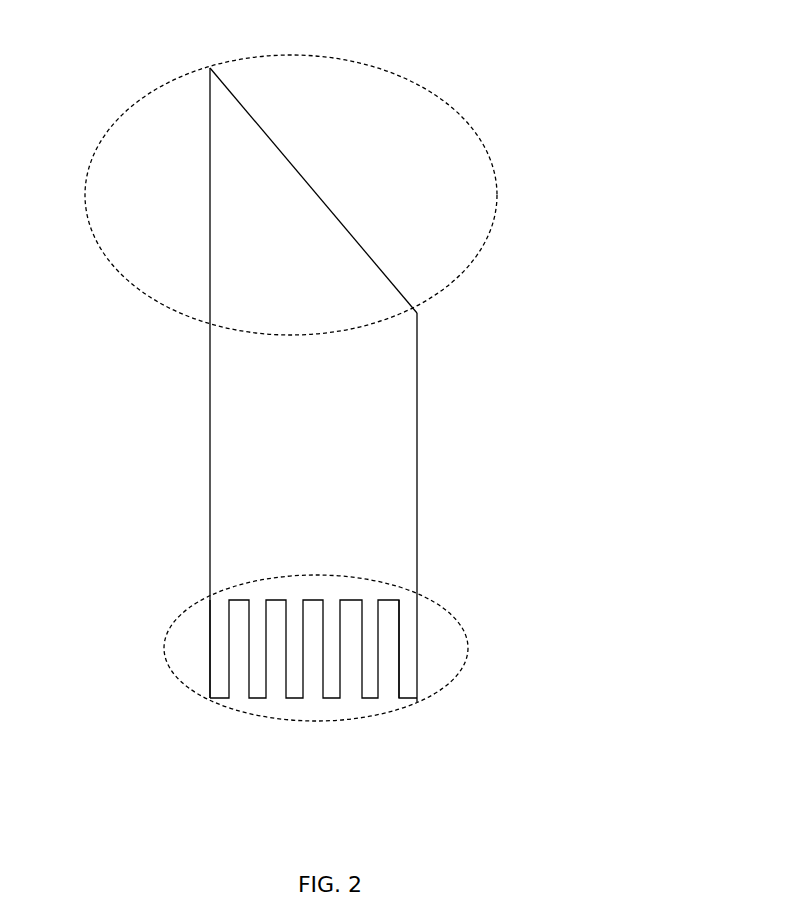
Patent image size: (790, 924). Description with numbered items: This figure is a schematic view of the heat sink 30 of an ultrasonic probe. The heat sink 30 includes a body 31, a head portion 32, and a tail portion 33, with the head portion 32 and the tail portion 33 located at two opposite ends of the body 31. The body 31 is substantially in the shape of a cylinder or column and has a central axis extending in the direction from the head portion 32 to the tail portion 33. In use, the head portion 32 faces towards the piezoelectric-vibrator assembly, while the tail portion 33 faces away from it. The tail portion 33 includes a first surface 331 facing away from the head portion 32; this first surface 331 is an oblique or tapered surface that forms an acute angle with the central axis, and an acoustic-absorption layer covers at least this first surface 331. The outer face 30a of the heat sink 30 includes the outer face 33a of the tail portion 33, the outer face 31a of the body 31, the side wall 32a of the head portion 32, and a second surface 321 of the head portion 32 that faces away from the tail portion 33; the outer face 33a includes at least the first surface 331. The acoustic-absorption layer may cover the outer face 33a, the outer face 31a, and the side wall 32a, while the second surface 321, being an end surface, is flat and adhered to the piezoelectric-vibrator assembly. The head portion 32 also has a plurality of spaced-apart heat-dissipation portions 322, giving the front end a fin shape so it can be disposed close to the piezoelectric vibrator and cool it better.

The heat sink 30 is at (594, 37).
The outer face 30a is at (430, 366).
The body 31 is at (319, 507).
The outer face of the body 31a is at (204, 461).
The head portion 32 is at (338, 688).
The side wall of the head portion 32a is at (204, 643).
The second surface 321 is at (373, 702).
The heat-dissipation portions 322 is at (407, 670).
The tail portion 33 is at (330, 187).
The outer face of the tail portion 33a is at (205, 198).
The first surface 331 is at (285, 148).